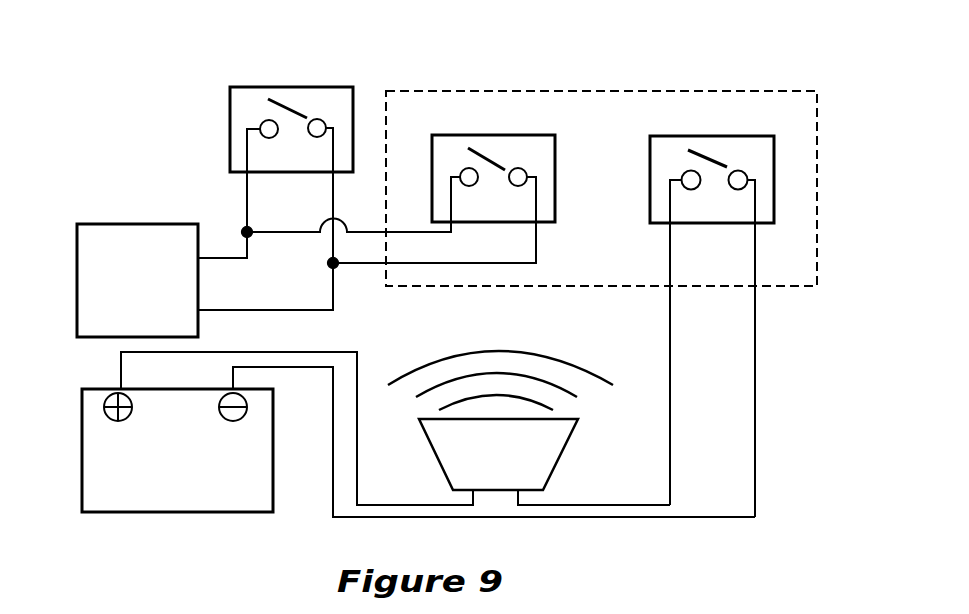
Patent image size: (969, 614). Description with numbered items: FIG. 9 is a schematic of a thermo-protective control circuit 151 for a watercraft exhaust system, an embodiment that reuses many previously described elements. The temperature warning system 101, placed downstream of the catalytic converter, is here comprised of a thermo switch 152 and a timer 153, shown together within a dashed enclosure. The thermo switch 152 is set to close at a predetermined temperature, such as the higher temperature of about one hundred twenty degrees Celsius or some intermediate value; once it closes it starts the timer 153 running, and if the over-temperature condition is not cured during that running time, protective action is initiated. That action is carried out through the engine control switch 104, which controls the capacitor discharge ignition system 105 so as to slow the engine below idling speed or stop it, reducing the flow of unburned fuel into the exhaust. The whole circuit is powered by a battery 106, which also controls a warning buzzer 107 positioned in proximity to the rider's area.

The control circuit 151 is at (130, 107).
The engine control switch 104 is at (230, 115).
The capacitor discharge ignition system 105 is at (122, 224).
The temperature warning system 101 is at (582, 91).
The timer 153 is at (555, 195).
The thermo switch 152 is at (774, 197).
The battery 106 is at (82, 442).
The warning buzzer 107 is at (553, 470).